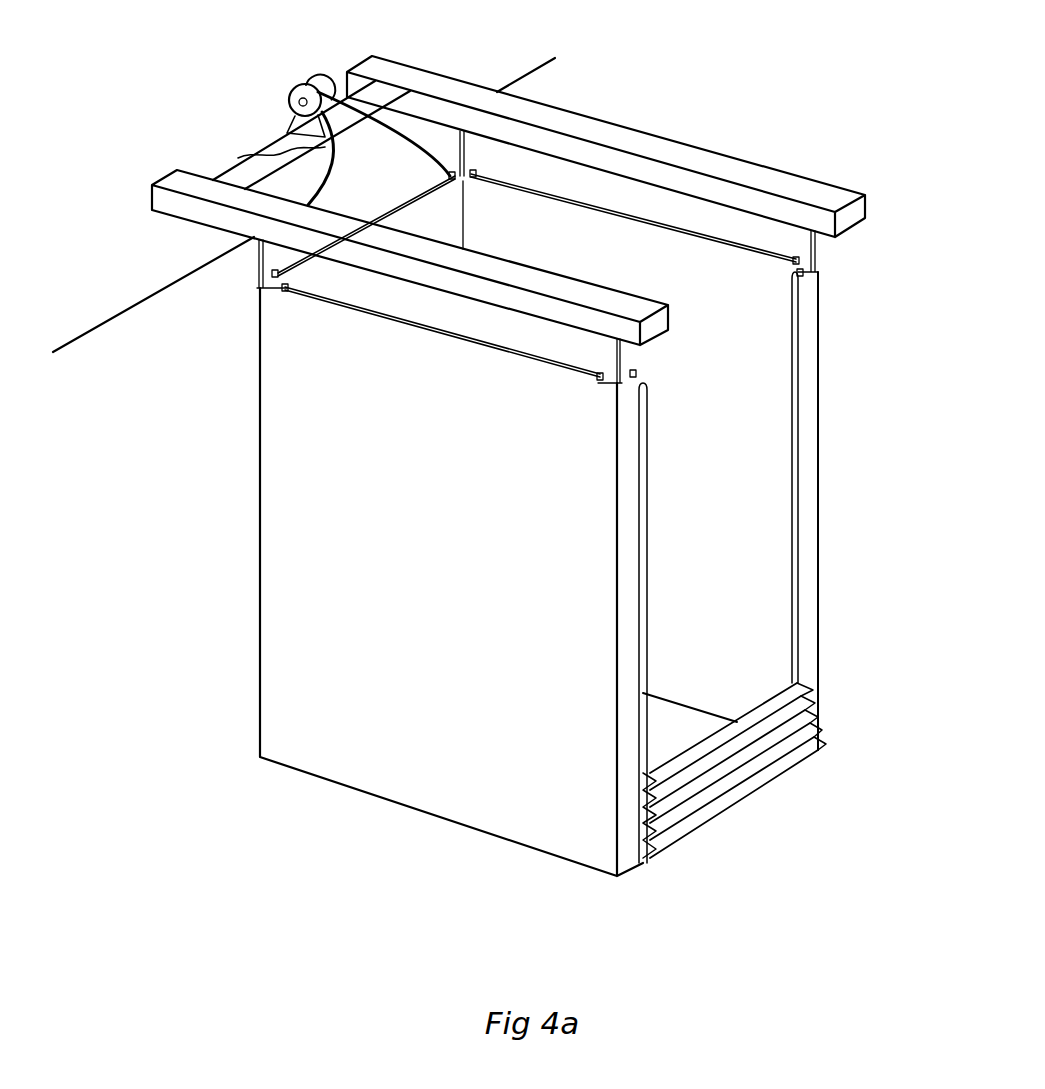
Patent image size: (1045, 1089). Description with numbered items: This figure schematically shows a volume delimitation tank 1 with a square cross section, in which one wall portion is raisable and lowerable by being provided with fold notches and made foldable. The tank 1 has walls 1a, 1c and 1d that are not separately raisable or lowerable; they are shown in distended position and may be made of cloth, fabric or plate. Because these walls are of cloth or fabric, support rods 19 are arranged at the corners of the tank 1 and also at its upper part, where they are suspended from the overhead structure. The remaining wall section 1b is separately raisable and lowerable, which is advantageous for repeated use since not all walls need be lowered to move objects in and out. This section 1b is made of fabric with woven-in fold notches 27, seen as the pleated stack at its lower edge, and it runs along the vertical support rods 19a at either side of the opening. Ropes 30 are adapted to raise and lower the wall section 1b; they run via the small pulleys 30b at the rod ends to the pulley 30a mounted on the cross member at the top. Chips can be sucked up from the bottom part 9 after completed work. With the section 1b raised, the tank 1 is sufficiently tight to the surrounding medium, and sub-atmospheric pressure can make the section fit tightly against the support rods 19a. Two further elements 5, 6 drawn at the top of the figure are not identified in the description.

The volume delimitation tank 1 is at (231, 616).
The wall 1a is at (694, 270).
The wall section 1b is at (770, 757).
The wall 1c is at (272, 519).
The wall 1d is at (446, 198).
The support rail 5 is at (117, 313).
The support beam 6 is at (458, 92).
The bottom part 9 is at (663, 743).
The support rods 19 is at (603, 203).
The vertical support rods 19a is at (797, 490).
The fold notches 27 is at (819, 731).
The ropes 30 is at (240, 157).
The pulley 30a is at (315, 83).
The pulleys 30b is at (474, 180).